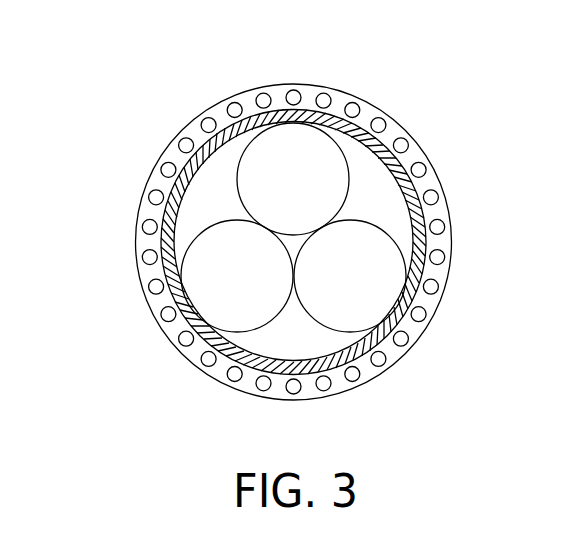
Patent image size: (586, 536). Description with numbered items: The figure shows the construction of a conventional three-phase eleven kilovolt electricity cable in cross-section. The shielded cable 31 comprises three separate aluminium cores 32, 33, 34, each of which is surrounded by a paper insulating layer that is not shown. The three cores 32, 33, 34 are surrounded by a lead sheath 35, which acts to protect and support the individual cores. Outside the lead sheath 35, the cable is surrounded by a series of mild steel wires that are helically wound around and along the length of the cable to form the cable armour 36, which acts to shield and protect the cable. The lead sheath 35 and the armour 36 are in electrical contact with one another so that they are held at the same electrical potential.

The shielded cable 31 is at (112, 132).
The aluminium core 32 is at (303, 137).
The aluminium core 33 is at (372, 310).
The aluminium core 34 is at (200, 282).
The lead sheath 35 is at (417, 262).
The cable armour 36 is at (262, 391).